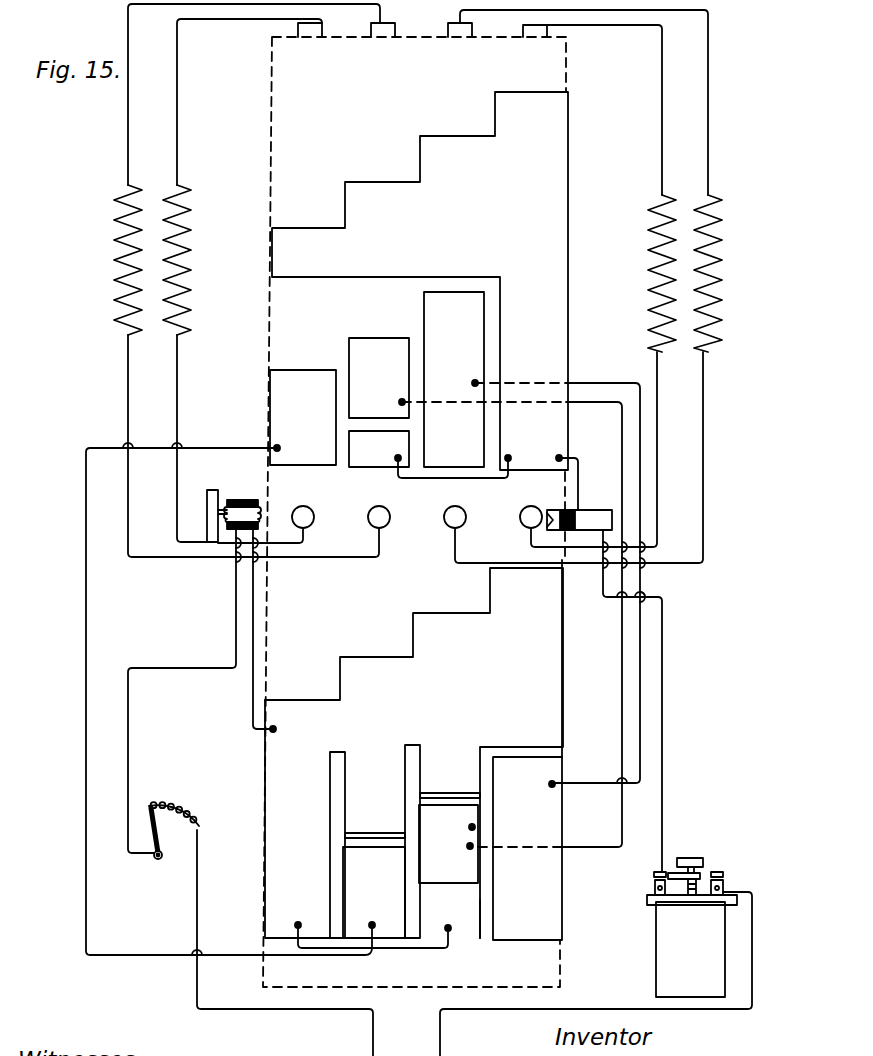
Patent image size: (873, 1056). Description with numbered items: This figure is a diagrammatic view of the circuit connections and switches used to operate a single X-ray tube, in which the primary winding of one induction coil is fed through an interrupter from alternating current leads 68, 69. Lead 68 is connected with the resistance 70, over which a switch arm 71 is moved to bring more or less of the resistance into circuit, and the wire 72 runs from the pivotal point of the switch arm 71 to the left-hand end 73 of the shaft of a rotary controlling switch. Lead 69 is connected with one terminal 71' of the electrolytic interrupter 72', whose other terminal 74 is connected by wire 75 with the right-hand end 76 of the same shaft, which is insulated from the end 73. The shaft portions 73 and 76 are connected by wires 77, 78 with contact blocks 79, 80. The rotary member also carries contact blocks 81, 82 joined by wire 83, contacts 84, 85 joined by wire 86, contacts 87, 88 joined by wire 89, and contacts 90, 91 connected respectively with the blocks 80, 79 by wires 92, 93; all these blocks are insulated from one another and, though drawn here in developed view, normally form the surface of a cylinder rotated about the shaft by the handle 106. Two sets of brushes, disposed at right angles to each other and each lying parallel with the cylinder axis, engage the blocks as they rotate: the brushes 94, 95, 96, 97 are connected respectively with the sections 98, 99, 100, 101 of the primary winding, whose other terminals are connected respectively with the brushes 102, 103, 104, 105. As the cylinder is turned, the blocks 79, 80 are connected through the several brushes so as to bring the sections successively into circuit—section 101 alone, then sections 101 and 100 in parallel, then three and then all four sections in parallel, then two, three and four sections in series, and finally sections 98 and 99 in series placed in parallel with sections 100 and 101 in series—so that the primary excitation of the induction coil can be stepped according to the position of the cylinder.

The alternating current lead 68 is at (370, 1035).
The alternating current lead 69 is at (440, 1035).
The resistance 70 is at (186, 811).
The switch arm 71 is at (172, 833).
The terminal of electrolytic interrupter 71' is at (742, 876).
The wire 72 is at (184, 691).
The electrolytic interrupter 72' is at (677, 927).
The left-hand end of rotary switch shaft 73 is at (243, 498).
The terminal of interrupter 74 is at (654, 883).
The wire 75 is at (664, 749).
The right-hand end of rotary switch shaft 76 is at (590, 509).
The wire 77 is at (251, 690).
The wire 78 is at (573, 452).
The contact block 79 is at (263, 839).
The contact block 80 is at (560, 276).
The contact block 81 is at (556, 906).
The contact block 82 is at (424, 303).
The wire 83 is at (638, 680).
The contact 84 is at (349, 346).
The contact 85 is at (473, 827).
The wire 86 is at (622, 822).
The contact 87 is at (270, 408).
The contact 88 is at (345, 883).
The wire 89 is at (90, 603).
The contact 90 is at (369, 459).
The contact 91 is at (472, 938).
The wire 92 is at (453, 479).
The wire 93 is at (399, 941).
The brush 94 is at (310, 38).
The brush 95 is at (386, 38).
The brush 96 is at (462, 38).
The brush 97 is at (539, 38).
The primary winding section 98 is at (188, 262).
The primary winding section 99 is at (118, 263).
The primary winding section 100 is at (714, 248).
The primary winding section 101 is at (653, 296).
The brush 102 is at (310, 526).
The brush 103 is at (386, 526).
The brush 104 is at (462, 528).
The brush 105 is at (519, 517).
The handle 106 is at (208, 489).